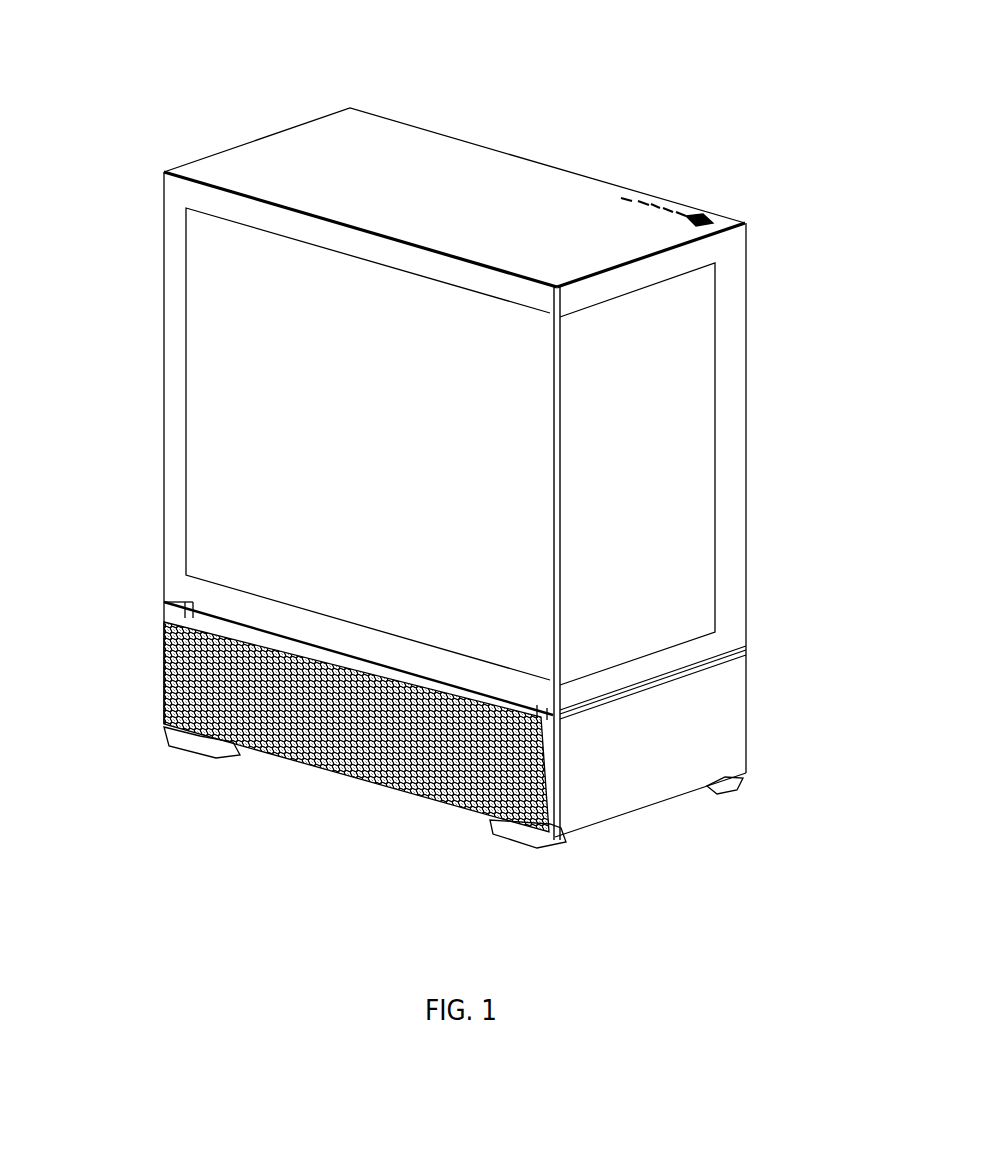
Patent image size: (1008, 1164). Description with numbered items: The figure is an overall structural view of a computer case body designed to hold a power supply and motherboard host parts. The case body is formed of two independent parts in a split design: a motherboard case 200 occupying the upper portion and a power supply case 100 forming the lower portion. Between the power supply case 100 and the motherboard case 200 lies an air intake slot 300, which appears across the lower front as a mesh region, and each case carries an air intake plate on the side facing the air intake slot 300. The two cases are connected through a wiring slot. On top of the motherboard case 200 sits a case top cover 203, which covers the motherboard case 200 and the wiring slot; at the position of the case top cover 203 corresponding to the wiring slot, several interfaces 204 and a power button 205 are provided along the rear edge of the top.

The power supply case 100 is at (655, 743).
The motherboard case 200 is at (650, 423).
The case top cover 203 is at (430, 185).
The interface 204 is at (665, 207).
The power button 205 is at (735, 220).
The air intake slot 300 is at (213, 622).